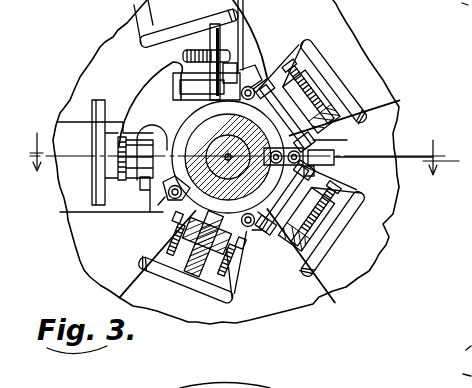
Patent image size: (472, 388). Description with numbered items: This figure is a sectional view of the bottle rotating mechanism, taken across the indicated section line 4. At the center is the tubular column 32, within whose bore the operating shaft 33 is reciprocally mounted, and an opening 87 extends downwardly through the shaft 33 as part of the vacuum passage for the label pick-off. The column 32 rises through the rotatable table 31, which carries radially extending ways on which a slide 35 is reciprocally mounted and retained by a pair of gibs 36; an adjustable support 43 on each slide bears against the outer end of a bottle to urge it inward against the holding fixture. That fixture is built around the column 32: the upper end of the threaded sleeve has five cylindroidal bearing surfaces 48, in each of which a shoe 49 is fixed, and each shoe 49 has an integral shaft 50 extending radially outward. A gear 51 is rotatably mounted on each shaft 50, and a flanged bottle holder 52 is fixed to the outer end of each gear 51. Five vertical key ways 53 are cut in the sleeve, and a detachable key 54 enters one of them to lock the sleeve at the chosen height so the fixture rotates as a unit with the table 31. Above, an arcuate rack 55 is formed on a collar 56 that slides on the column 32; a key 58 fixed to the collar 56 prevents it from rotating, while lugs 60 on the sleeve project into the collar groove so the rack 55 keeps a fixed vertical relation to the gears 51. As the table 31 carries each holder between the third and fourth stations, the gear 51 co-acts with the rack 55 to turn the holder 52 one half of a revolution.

The table 31 is at (262, 62).
The tubular column 32 is at (347, 133).
The operating shaft 33 is at (147, 211).
The slide 35 is at (213, 125).
The gibs 36 is at (257, 247).
The adjustable support 43 is at (349, 0).
The cylindroidal bearing surfaces 48 is at (238, 278).
The shoe 49 is at (170, 228).
The shaft 50 is at (237, 288).
The gear 51 is at (366, 237).
The flanged bottle holder 52 is at (349, 271).
The key ways 53 is at (254, 86).
The key 54 is at (334, 160).
The arcuate rack 55 is at (201, 137).
The collar 56 is at (265, 125).
The key 58 is at (313, 173).
The lugs 60 is at (262, 90).
The opening 87 is at (207, 140).
The section line 4- 4 is at (238, 163).